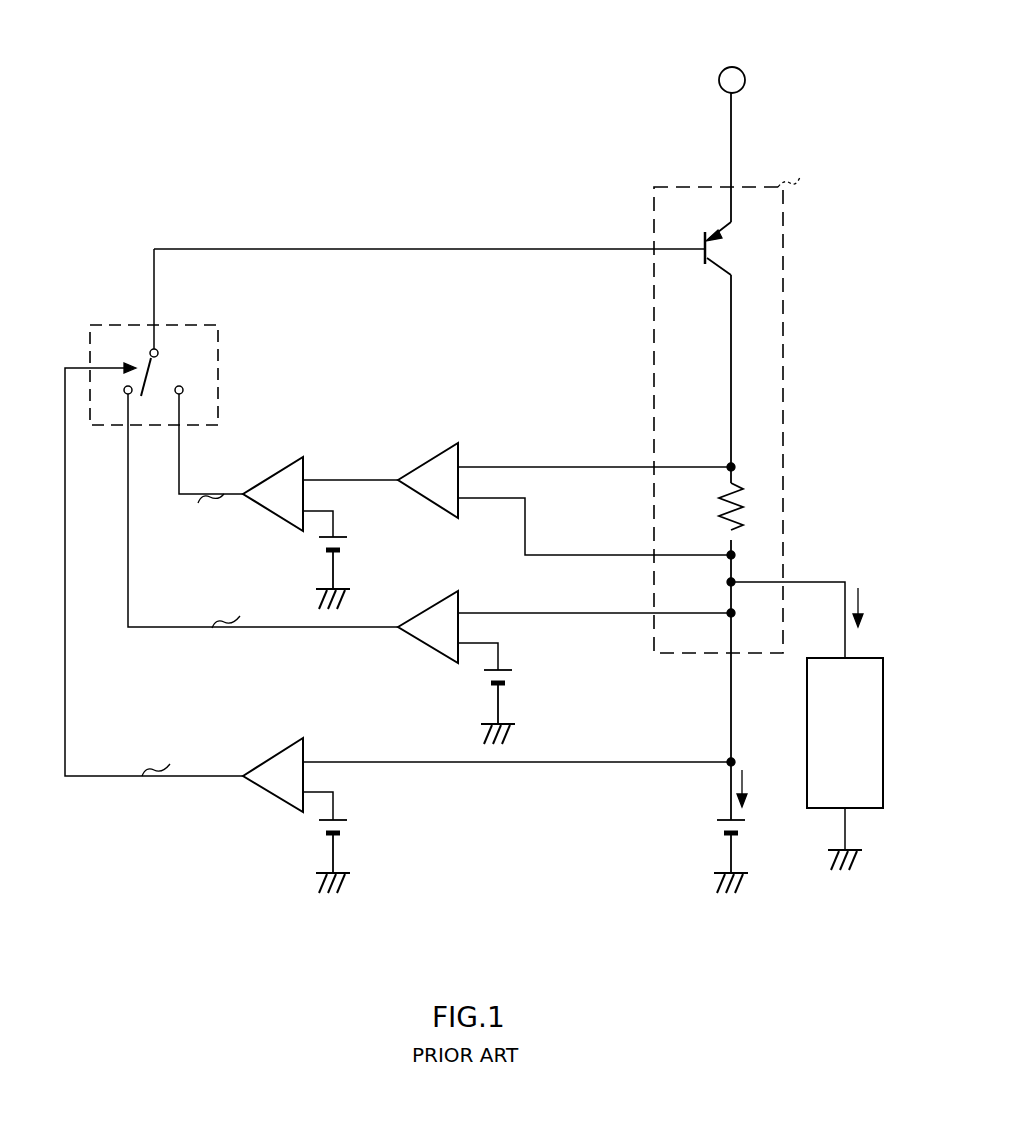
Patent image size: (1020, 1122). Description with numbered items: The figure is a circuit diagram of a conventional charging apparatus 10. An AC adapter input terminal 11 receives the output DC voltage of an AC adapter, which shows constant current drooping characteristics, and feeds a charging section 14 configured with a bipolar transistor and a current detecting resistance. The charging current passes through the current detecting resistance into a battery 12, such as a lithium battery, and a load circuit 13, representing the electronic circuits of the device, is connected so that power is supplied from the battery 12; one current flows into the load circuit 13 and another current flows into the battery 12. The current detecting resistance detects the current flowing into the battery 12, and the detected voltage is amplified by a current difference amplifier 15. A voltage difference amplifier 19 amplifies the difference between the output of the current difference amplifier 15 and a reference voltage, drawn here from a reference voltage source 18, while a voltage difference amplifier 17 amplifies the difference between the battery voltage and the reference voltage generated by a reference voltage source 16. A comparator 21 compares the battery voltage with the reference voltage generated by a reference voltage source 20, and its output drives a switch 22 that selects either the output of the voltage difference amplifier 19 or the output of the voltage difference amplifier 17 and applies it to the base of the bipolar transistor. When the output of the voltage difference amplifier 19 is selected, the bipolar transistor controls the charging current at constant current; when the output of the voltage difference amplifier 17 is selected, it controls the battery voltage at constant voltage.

The charging apparatus 10 is at (466, 68).
The AC adapter input terminal 11 is at (739, 64).
The battery 12 is at (718, 820).
The load circuit 13 is at (840, 656).
The charging section 14 is at (784, 362).
The current difference amplifier 15 is at (459, 452).
The reference voltage source 16 is at (505, 671).
The voltage difference amplifier 17 is at (459, 600).
The reference voltage source 18 is at (347, 536).
The voltage difference amplifier 19 is at (277, 473).
The reference voltage source 20 is at (346, 820).
The comparator 21 is at (277, 760).
The switch 22 is at (132, 324).